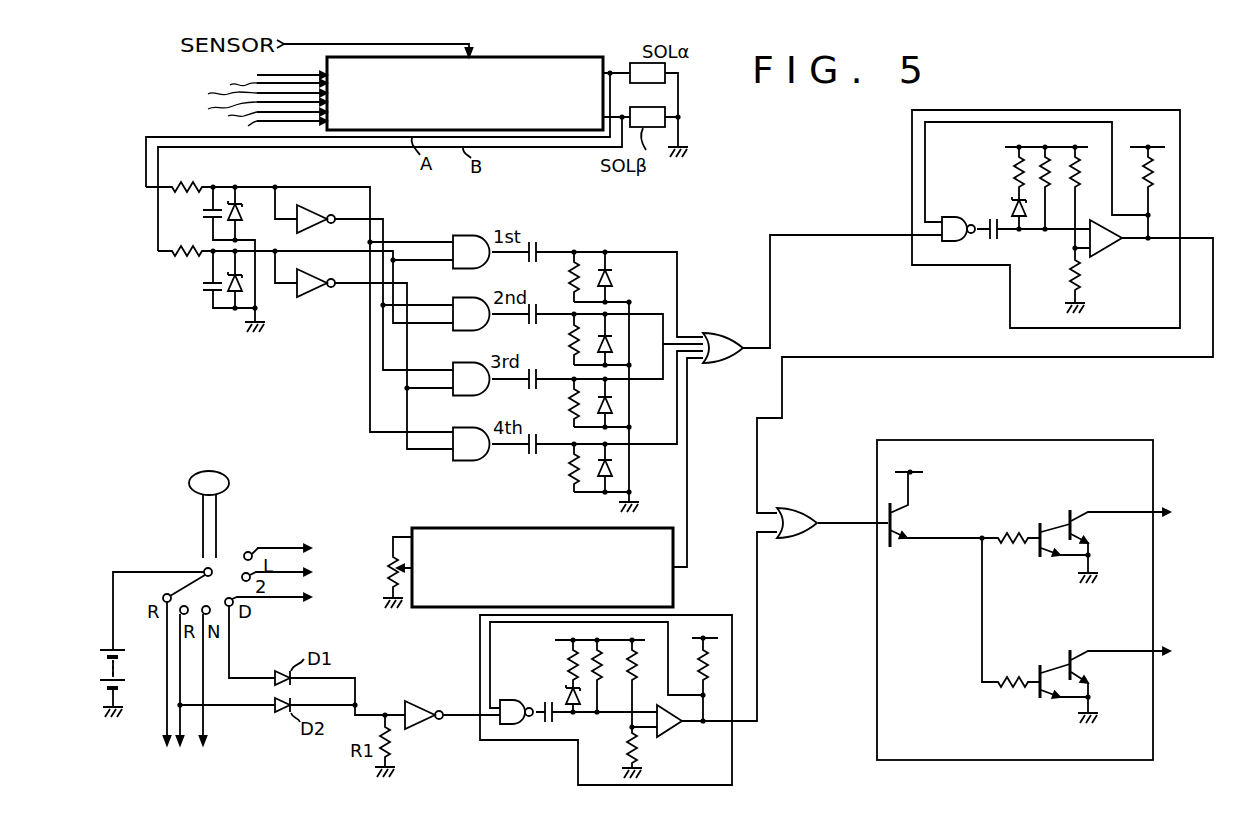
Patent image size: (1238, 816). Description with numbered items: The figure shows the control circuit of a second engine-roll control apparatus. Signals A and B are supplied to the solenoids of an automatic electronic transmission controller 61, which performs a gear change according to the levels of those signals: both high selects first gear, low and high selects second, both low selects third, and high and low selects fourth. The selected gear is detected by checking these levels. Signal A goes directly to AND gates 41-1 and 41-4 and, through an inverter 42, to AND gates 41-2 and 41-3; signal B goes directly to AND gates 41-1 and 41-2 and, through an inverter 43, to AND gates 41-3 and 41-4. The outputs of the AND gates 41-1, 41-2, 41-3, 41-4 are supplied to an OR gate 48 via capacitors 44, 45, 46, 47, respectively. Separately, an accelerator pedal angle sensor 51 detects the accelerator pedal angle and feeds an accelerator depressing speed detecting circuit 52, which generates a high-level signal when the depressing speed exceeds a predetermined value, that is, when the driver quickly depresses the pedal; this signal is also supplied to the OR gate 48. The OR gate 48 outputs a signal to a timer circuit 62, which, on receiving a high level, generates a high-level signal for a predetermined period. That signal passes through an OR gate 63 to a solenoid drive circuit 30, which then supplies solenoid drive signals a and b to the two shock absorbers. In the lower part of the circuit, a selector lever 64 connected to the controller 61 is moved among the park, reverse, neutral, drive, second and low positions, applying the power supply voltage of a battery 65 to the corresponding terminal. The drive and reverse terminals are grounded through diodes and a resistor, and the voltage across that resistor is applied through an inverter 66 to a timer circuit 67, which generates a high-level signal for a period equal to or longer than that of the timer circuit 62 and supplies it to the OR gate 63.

The solenoid drive circuit 30 is at (1157, 449).
The AND gate 41-1 is at (452, 236).
The AND gate 41-2 is at (453, 304).
The AND gate 41-3 is at (453, 369).
The AND gate 41-4 is at (455, 432).
The inverter 42 is at (320, 212).
The inverter 43 is at (320, 276).
The capacitor 44 is at (541, 248).
The capacitor 45 is at (536, 307).
The capacitor 46 is at (538, 370).
The capacitor 47 is at (539, 430).
The OR gate 48 is at (731, 332).
The accelerator pedal angle sensor 51 is at (388, 566).
The accelerator depressing speed detecting circuit 52 is at (474, 528).
The automatic electronic transmission controller 61 is at (582, 57).
The timer circuit 62 is at (1182, 160).
The OR gate 63 is at (808, 507).
The shift lever 64 is at (230, 481).
The battery 65 is at (103, 669).
The inverter 66 is at (431, 708).
The timer circuit 67 is at (525, 743).